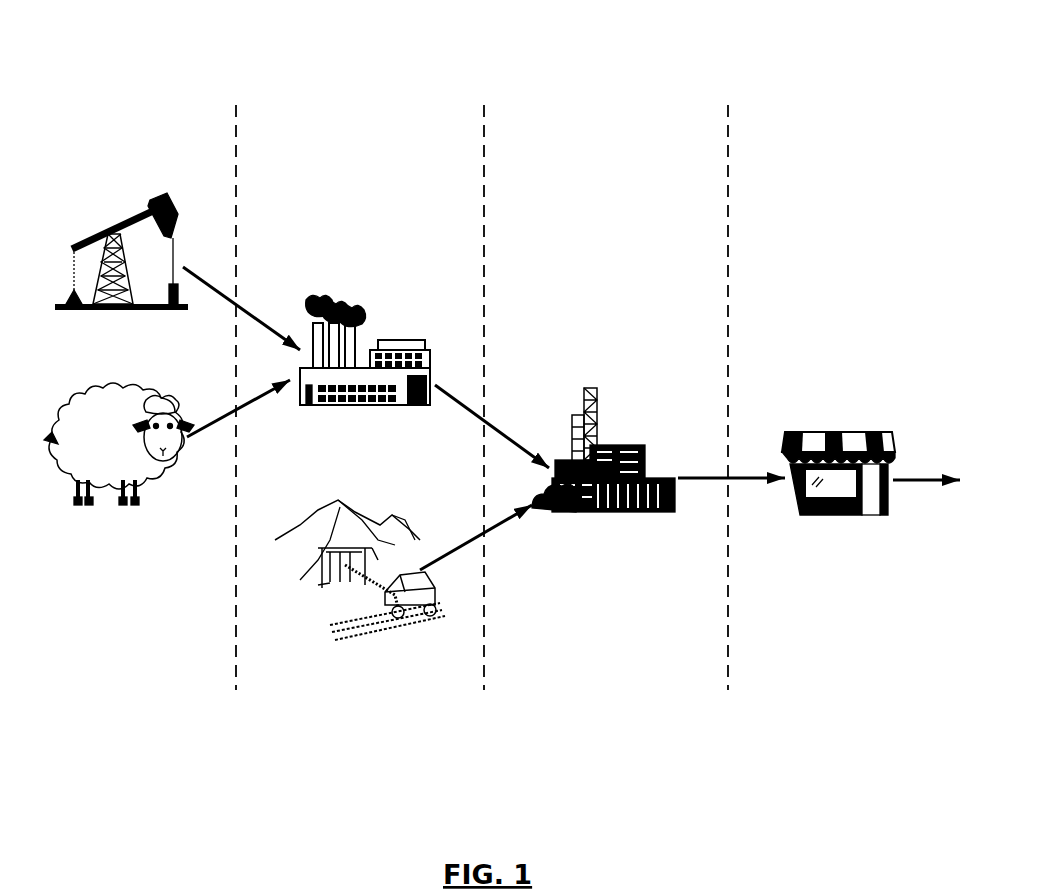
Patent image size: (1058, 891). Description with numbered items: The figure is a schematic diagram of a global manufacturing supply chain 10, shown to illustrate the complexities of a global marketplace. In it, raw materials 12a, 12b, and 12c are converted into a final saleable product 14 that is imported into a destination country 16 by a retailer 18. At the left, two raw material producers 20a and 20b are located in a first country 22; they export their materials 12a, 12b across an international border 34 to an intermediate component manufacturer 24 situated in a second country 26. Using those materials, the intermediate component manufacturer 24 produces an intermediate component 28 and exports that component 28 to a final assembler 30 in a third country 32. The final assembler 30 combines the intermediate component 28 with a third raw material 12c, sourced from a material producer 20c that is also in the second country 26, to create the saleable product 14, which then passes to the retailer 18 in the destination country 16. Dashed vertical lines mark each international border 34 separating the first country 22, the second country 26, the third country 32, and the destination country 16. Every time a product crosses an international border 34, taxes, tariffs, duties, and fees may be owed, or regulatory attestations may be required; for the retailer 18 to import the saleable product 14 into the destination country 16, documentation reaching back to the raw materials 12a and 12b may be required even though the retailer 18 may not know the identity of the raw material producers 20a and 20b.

The global manufacturing supply chain 10 is at (880, 92).
The raw material 12a is at (243, 307).
The raw material 12b is at (221, 420).
The third raw material 12c is at (495, 555).
The final saleable product 14 is at (702, 445).
The destination country 16 is at (838, 670).
The retailer 18 is at (838, 432).
The raw material producer 20a is at (112, 228).
The raw material producer 20b is at (122, 505).
The material producer 20c is at (410, 640).
The first country 22 is at (130, 672).
The intermediate component manufacturer 24 is at (404, 340).
The second country 26 is at (360, 672).
The intermediate component 28 is at (500, 430).
The final assembler 30 is at (650, 510).
The third country 32 is at (605, 672).
The international border 34 is at (248, 160).